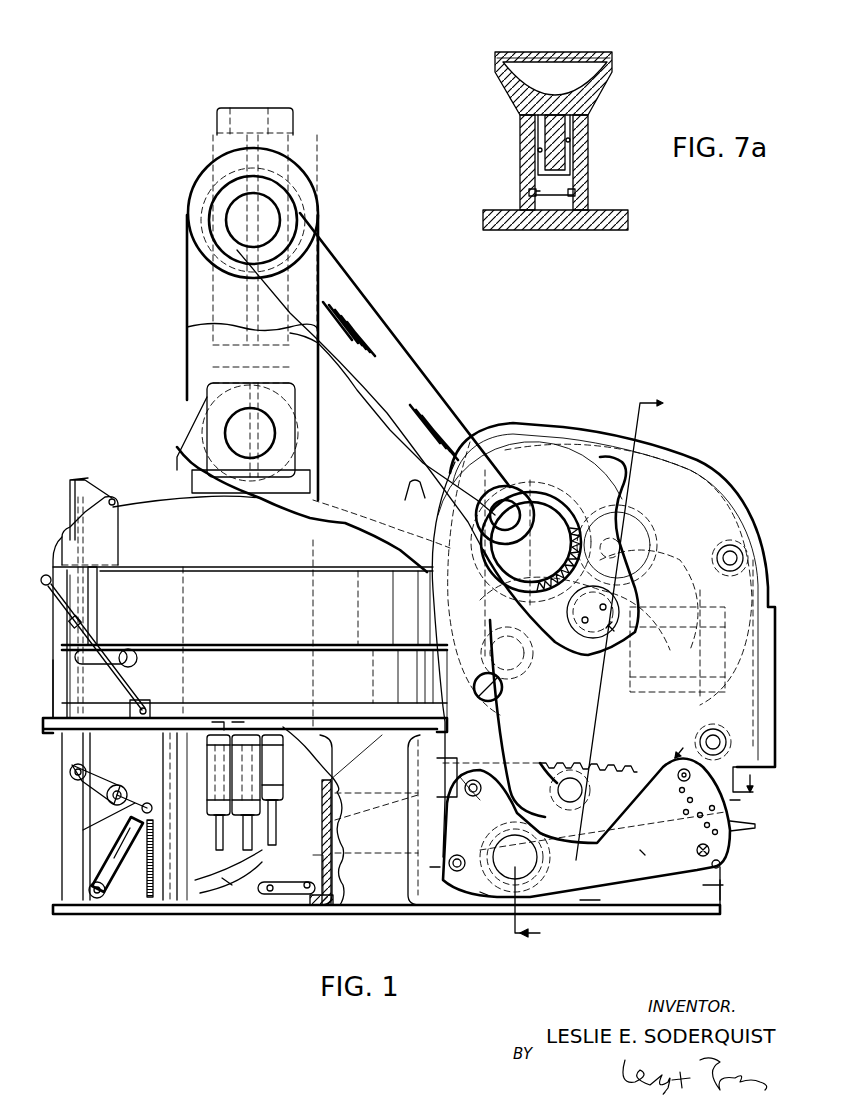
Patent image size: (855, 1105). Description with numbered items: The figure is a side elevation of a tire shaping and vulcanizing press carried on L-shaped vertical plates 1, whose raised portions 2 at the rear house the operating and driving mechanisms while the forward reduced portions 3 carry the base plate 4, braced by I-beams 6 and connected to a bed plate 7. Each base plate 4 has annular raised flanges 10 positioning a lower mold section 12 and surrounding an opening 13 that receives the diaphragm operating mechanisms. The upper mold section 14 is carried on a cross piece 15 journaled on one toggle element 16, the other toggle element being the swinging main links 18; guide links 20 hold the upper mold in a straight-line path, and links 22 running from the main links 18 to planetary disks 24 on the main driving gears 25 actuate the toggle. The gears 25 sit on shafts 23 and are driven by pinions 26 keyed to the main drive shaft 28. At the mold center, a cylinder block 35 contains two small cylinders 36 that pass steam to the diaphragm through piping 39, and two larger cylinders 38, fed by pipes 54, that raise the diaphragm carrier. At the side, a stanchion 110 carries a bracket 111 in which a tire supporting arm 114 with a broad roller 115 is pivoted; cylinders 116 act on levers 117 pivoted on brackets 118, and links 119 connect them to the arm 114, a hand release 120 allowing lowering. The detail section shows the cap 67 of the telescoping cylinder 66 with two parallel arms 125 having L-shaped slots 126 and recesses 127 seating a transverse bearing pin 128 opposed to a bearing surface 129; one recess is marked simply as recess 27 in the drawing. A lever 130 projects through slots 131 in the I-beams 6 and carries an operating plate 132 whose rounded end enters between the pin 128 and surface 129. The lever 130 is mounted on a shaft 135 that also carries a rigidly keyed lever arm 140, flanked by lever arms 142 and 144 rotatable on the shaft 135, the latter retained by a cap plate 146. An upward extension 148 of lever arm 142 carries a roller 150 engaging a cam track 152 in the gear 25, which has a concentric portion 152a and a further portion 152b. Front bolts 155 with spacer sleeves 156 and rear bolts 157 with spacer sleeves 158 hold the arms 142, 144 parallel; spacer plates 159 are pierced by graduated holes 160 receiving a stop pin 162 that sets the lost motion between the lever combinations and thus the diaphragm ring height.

In FIG. 1, the vertical plates 1 is at (705, 903).
In FIG. 1, the raised portions 2 is at (733, 478).
In FIG. 1, the reduced portions 3 is at (121, 893).
In FIG. 1, the base plate 4 is at (45, 731).
In FIG. 1, the I-beams 6 is at (80, 887).
In FIG. 7A, the bed plate 7 is at (535, 230).
In FIG. 1, the bed plate 7 is at (663, 932).
In FIG. 1, the annular raised flanges 10 is at (53, 707).
In FIG. 1, the lower mold section 12 is at (60, 683).
In FIG. 1, the opening 13 is at (218, 722).
In FIG. 1, the upper mold section 14 is at (50, 593).
In FIG. 1, the cross piece 15 is at (197, 480).
In FIG. 1, the toggle element 16 is at (285, 139).
In FIG. 1, the swinging main links 18 is at (308, 403).
In FIG. 1, the guide links 20 is at (345, 473).
In FIG. 1, the links 22 is at (388, 332).
In FIG. 1, the shafts 23 is at (582, 612).
In FIG. 1, the planetary gears or disks 24 is at (540, 500).
In FIG. 1, the main driving gears 25 is at (723, 530).
In FIG. 1, the pinions 26 is at (590, 790).
In FIG. 7A, the ring 27 is at (528, 193).
In FIG. 1, the main drive shaft 28 is at (563, 780).
In FIG. 1, the cylinder block 35 is at (280, 768).
In FIG. 1, the small cylinders 36 is at (235, 722).
In FIG. 1, the larger cylinders 38 is at (240, 770).
In FIG. 1, the piping 39 is at (225, 845).
In FIG. 1, the pipes 54 is at (188, 865).
In FIG. 7A, the cylinder 66 is at (610, 63).
In FIG. 7A, the cap 67 is at (590, 103).
In FIG. 1, the stanchion 110 is at (72, 637).
In FIG. 1, the bracket 111 is at (113, 502).
In FIG. 1, the arm 114 is at (97, 602).
In FIG. 1, the broad roller 115 is at (137, 660).
In FIG. 1, the cylinders 116 is at (85, 867).
In FIG. 1, the levers 117 is at (108, 790).
In FIG. 1, the brackets 118 is at (90, 817).
In FIG. 1, the links 119 is at (70, 772).
In FIG. 1, the hand release 120 is at (63, 610).
In FIG. 7A, the arms 125 is at (585, 165).
In FIG. 1, the arms 125 is at (225, 895).
In FIG. 7A, the L-shaped slots 126 is at (575, 140).
In FIG. 7A, the recesses 127 is at (575, 200).
In FIG. 7A, the transverse bearing pin 128 is at (578, 185).
In FIG. 1, the transverse bearing pin 128 is at (250, 895).
In FIG. 7A, the bearing surface 129 is at (545, 125).
In FIG. 1, the lever 130 is at (348, 862).
In FIG. 1, the slots 131 is at (333, 800).
In FIG. 1, the operating plate 132 is at (280, 894).
In FIG. 1, the shaft 135 is at (480, 892).
In FIG. 1, the lever arm 140 is at (642, 852).
In FIG. 1, the lever arm 142 is at (437, 867).
In FIG. 1, the lever arm 144 is at (590, 900).
In FIG. 1, the cap plate 146 is at (530, 857).
In FIG. 1, the upward extension 148 is at (473, 737).
In FIG. 1, the roller 150 is at (489, 664).
In FIG. 1, the cam track 152 is at (543, 753).
In FIG. 1, the concentric portion 152a is at (588, 761).
In FIG. 1, the rack guide 152b is at (660, 528).
In FIG. 1, the bolts 155 is at (460, 777).
In FIG. 1, the spacer sleeves 156 is at (482, 789).
In FIG. 1, the bolts 157 is at (675, 800).
In FIG. 1, the spacer sleeves 158 is at (677, 772).
In FIG. 1, the spacer plates 159 is at (723, 800).
In FIG. 1, the holes 160 is at (755, 826).
In FIG. 1, the stop pin 162 is at (723, 840).